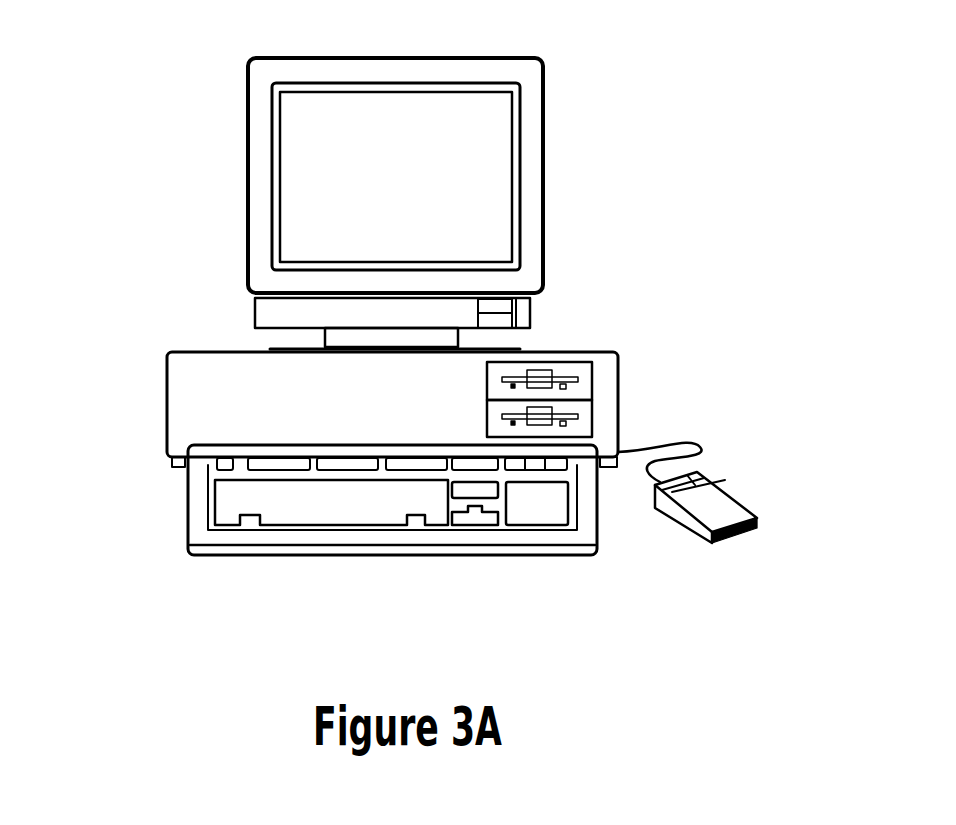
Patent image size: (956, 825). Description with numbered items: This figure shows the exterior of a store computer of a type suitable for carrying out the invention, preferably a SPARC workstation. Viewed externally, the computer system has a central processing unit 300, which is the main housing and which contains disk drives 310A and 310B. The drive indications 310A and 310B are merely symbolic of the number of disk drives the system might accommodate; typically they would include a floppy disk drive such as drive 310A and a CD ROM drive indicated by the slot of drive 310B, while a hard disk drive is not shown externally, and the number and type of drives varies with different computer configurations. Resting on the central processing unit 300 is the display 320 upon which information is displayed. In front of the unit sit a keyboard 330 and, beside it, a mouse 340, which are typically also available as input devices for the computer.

The central processing unit 300 is at (316, 408).
The disk drive 310A is at (458, 382).
The disk drive 310B is at (458, 425).
The display 320 is at (565, 180).
The keyboard 330 is at (155, 519).
The mouse 340 is at (763, 497).